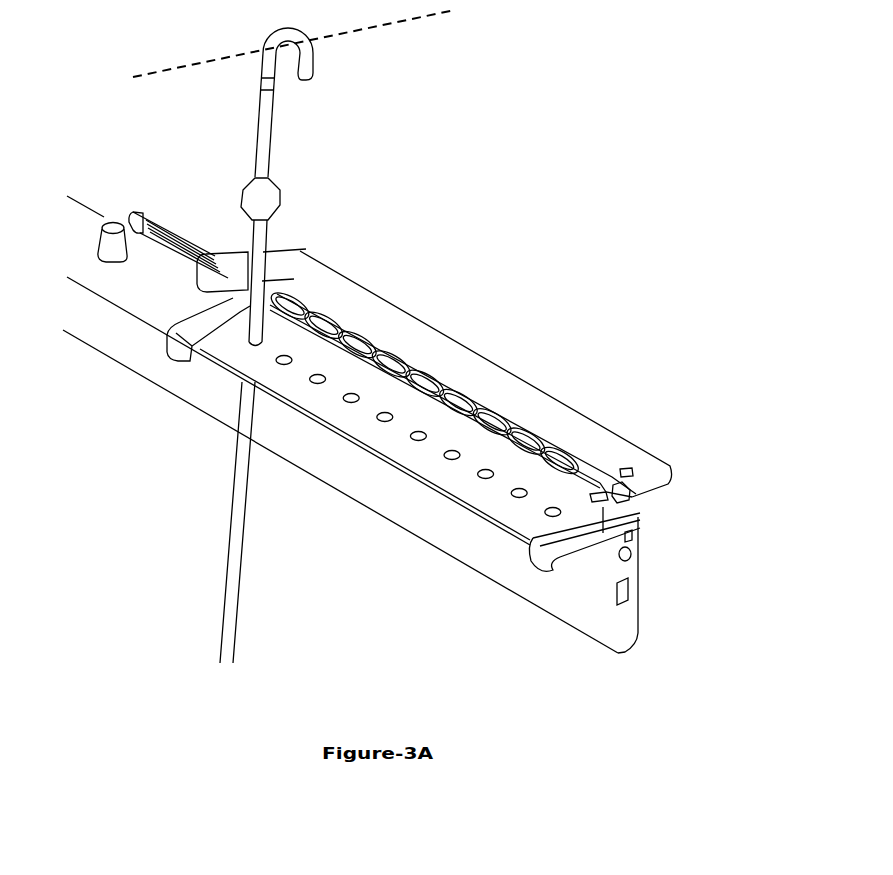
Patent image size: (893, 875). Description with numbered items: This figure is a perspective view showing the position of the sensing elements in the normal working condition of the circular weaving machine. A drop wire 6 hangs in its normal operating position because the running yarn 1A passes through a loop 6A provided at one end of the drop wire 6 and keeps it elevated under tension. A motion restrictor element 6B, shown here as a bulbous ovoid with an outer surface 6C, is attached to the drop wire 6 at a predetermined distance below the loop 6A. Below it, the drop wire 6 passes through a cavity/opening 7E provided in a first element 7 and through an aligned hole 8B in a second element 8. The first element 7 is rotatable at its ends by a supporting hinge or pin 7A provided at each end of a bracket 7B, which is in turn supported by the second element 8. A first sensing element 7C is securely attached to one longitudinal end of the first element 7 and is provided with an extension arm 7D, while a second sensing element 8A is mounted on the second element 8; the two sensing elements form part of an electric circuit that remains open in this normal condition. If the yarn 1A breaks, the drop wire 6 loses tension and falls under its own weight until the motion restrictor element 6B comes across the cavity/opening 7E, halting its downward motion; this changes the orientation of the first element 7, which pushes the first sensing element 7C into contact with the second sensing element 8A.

The yarn 1A is at (392, 28).
The drop wire 6 is at (277, 133).
The loop 6A is at (312, 55).
The motion restrictor element 6B is at (282, 200).
The outer surface of motion restrictor element 6C is at (273, 218).
The first element 7 is at (540, 397).
The supporting hinge or pin 7A is at (628, 493).
The bracket 7B is at (643, 522).
The first sensing element 7C is at (133, 217).
The extension arm 7D is at (188, 240).
The cavity/opening 7E is at (400, 363).
The second element 8 is at (487, 503).
The second sensing element 8A is at (118, 228).
The hole 8B is at (427, 433).